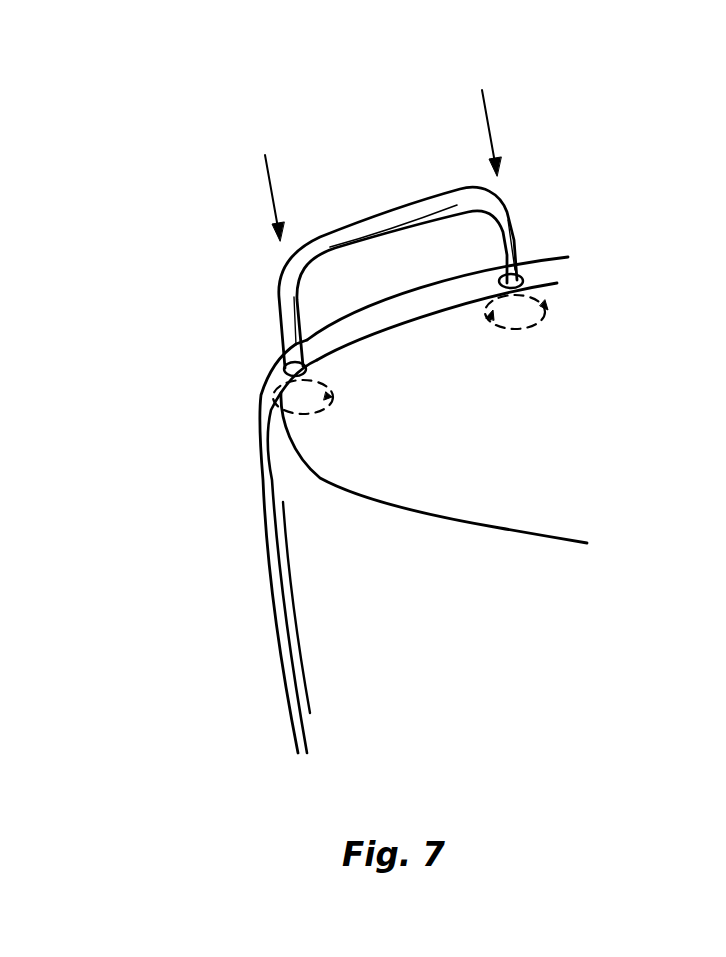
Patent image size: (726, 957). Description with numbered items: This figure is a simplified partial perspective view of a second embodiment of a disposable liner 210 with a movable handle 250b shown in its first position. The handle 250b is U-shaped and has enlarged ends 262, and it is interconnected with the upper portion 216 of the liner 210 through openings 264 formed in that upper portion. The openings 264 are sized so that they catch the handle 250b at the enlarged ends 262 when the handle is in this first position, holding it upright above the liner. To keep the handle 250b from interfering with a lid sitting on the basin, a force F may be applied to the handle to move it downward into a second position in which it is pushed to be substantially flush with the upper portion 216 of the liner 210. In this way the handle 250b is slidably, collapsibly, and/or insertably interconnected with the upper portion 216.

The liner 210 is at (358, 625).
The upper portion 216 is at (562, 252).
The handle 250b is at (368, 218).
The openings 264 is at (317, 362).
The enlarged ends 262 is at (333, 402).
The force F is at (377, 149).